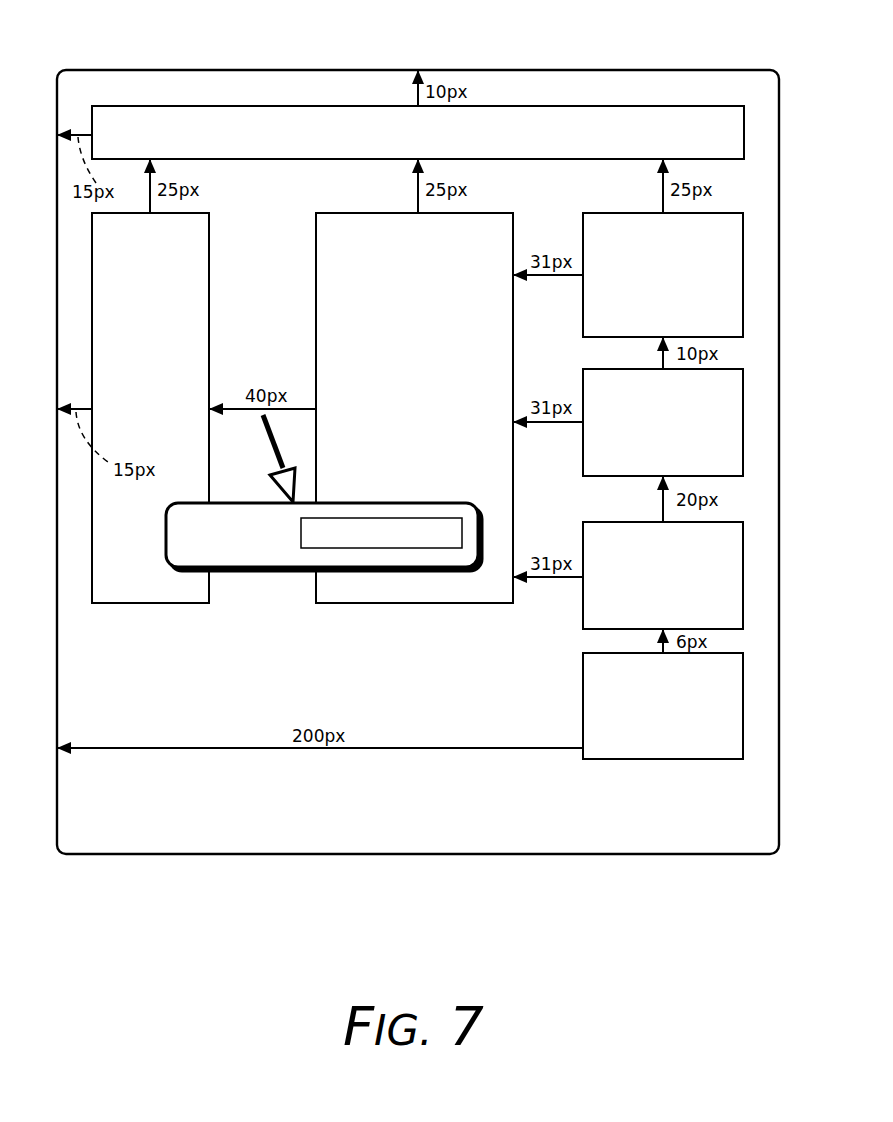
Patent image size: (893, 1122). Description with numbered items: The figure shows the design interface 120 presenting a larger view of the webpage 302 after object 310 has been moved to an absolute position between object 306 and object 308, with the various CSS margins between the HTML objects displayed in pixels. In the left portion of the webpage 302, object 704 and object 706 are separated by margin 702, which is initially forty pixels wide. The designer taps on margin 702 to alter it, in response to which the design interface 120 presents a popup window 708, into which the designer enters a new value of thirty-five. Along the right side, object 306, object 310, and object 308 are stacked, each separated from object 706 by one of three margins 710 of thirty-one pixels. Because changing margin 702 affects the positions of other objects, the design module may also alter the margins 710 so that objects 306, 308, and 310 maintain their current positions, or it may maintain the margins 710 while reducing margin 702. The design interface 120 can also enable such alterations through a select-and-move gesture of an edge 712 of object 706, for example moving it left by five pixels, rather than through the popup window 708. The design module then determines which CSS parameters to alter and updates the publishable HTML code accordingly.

The design interface 120 is at (429, 441).
The webpage 302 is at (418, 462).
The object 306 is at (663, 275).
The object 308 is at (663, 575).
The object 310 is at (663, 422).
The margin 702 is at (287, 374).
The object 704 is at (150, 408).
The object 706 is at (414, 408).
The popup window 708 is at (350, 567).
The margins 710 is at (550, 230).
The edge 712 is at (314, 243).